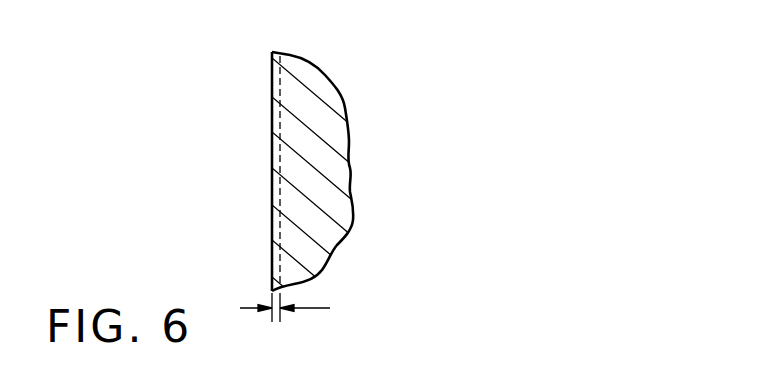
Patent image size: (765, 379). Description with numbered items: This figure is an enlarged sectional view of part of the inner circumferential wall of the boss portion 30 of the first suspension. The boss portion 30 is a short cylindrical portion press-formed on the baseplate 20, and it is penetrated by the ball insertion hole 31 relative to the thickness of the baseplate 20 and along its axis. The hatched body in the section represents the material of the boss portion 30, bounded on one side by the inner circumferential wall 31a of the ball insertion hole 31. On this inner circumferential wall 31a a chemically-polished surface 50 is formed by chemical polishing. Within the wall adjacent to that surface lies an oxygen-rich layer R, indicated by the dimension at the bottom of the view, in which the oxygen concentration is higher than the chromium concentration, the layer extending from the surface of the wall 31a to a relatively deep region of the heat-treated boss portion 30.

The baseplate 20 is at (321, 56).
The boss portion 30 is at (338, 158).
The ball insertion hole 31 is at (208, 130).
The inner circumferential wall 31a is at (272, 253).
The chemically-polished surface 50 is at (272, 180).
The oxygen-rich layer R is at (285, 319).